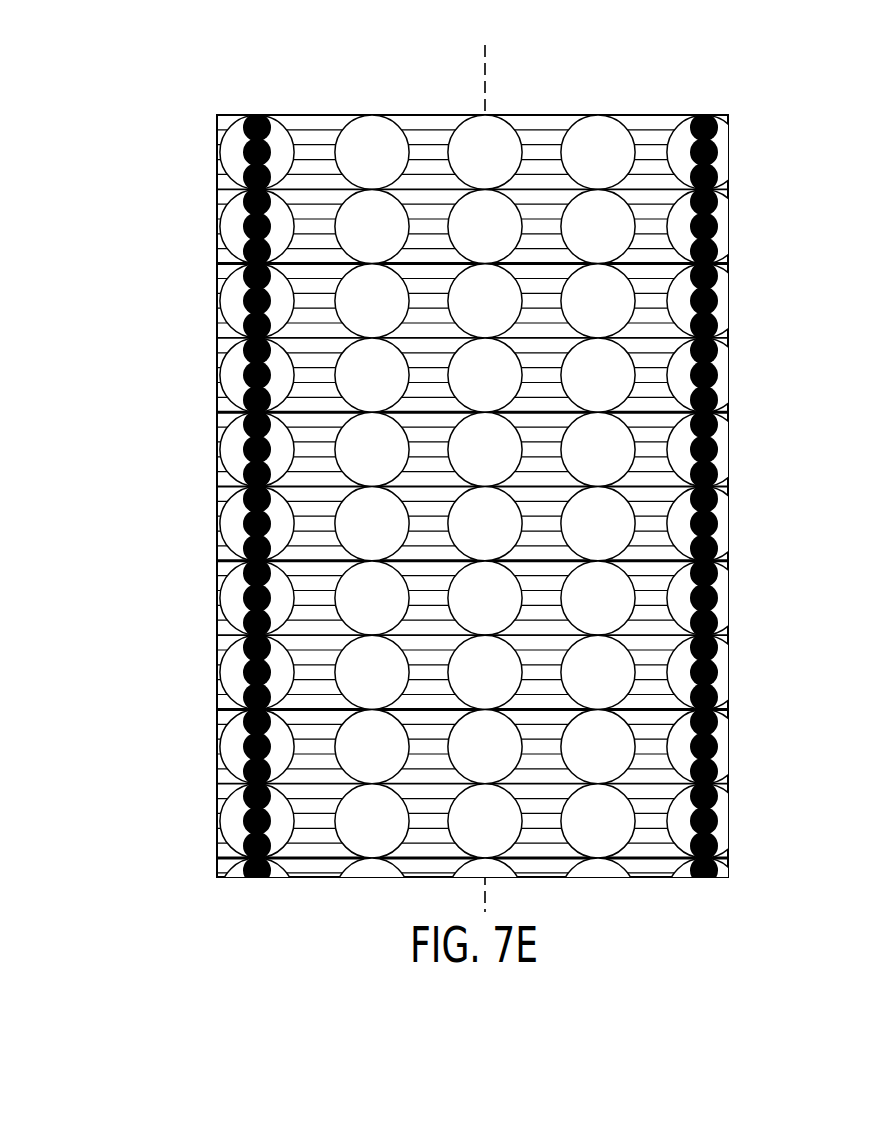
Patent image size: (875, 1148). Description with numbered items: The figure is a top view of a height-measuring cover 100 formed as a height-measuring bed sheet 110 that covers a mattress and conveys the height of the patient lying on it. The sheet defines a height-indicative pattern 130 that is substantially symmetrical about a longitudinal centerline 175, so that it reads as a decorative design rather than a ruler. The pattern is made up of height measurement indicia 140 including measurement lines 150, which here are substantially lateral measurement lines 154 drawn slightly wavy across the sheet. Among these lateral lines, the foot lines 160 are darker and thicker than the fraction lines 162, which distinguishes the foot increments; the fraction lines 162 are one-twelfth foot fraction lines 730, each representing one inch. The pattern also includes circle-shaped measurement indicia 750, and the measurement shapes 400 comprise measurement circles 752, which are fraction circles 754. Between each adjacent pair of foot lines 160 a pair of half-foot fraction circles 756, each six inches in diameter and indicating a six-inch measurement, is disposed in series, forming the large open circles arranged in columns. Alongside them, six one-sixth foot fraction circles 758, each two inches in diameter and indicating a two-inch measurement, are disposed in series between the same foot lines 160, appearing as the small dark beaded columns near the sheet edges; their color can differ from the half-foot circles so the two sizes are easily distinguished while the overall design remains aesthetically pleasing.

The height-measuring cover 100 is at (485, 486).
The height-measuring bed sheet 110 is at (485, 486).
The height-indicative pattern 130 is at (652, 423).
The height measurement indicia 140 is at (485, 494).
The measurement lines 150 is at (704, 522).
The substantially lateral measurement lines 154 is at (704, 522).
The foot lines 160 is at (307, 712).
The fraction lines 162 is at (704, 522).
The longitudinal centerline 175 is at (487, 73).
The measurement shapes 400 is at (485, 494).
The one-twelfth foot fraction lines 730 is at (704, 522).
The circle-shaped measurement indicia 750 is at (485, 152).
The measurement circles 752 is at (598, 152).
The fraction circles 754 is at (257, 522).
The half-foot fraction circles 756 is at (257, 523).
The one-sixth foot fraction circles 758 is at (257, 498).